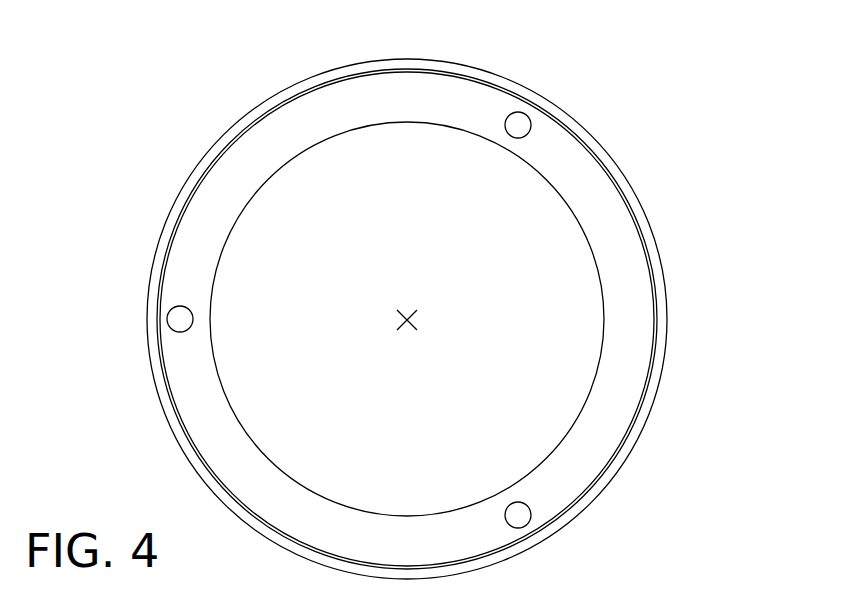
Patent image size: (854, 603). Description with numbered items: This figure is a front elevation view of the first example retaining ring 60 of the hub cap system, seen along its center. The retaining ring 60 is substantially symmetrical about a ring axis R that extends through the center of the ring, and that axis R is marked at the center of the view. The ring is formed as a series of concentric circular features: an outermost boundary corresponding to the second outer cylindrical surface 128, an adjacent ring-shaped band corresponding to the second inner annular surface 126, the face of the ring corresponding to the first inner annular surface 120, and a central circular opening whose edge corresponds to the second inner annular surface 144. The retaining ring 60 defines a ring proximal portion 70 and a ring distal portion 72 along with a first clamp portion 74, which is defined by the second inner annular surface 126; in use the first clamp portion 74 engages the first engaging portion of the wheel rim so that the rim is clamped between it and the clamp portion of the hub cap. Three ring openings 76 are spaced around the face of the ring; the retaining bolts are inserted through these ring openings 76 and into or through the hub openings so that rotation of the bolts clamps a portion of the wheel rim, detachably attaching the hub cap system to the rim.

The retaining ring 60 is at (722, 77).
The ring distal portion 72 is at (215, 142).
The second outer cylindrical surface 128 is at (452, 60).
The first clamp portion 74 is at (662, 358).
The second inner annular surface 126 is at (572, 122).
The first inner annular surface 120 is at (630, 292).
The ring proximal portion 70 is at (262, 185).
The second inner annular surface 144 is at (287, 478).
The ring openings 76 is at (180, 319).
The ring axis R is at (412, 318).